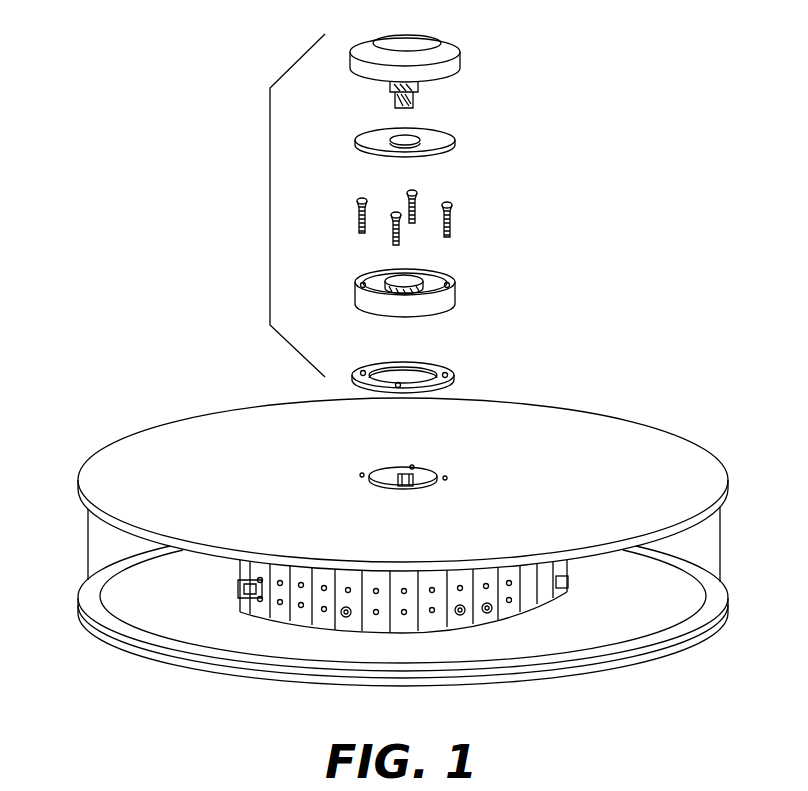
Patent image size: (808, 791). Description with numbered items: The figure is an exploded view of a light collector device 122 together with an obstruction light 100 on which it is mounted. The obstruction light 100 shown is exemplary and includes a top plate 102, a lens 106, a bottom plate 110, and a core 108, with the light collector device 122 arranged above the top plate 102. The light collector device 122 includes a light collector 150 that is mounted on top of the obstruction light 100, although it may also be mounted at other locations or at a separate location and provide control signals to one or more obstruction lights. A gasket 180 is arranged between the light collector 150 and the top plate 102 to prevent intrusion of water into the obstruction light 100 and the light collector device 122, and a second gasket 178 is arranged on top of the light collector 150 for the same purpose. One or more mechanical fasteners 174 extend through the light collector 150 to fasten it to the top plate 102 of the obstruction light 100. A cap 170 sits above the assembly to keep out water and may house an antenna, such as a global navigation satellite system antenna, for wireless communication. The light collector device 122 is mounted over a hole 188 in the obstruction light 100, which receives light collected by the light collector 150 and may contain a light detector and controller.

The obstruction light 100 is at (712, 393).
The top plate 102 is at (565, 425).
The lens 106 is at (702, 555).
The core 108 is at (282, 600).
The bottom plate 110 is at (718, 633).
The light collector device 122 is at (270, 185).
The light collector 150 is at (456, 280).
The cap 170 is at (460, 54).
The mechanical fasteners 174 is at (451, 203).
The gasket 178 is at (454, 138).
The gasket 180 is at (455, 371).
The hole 188 is at (442, 471).